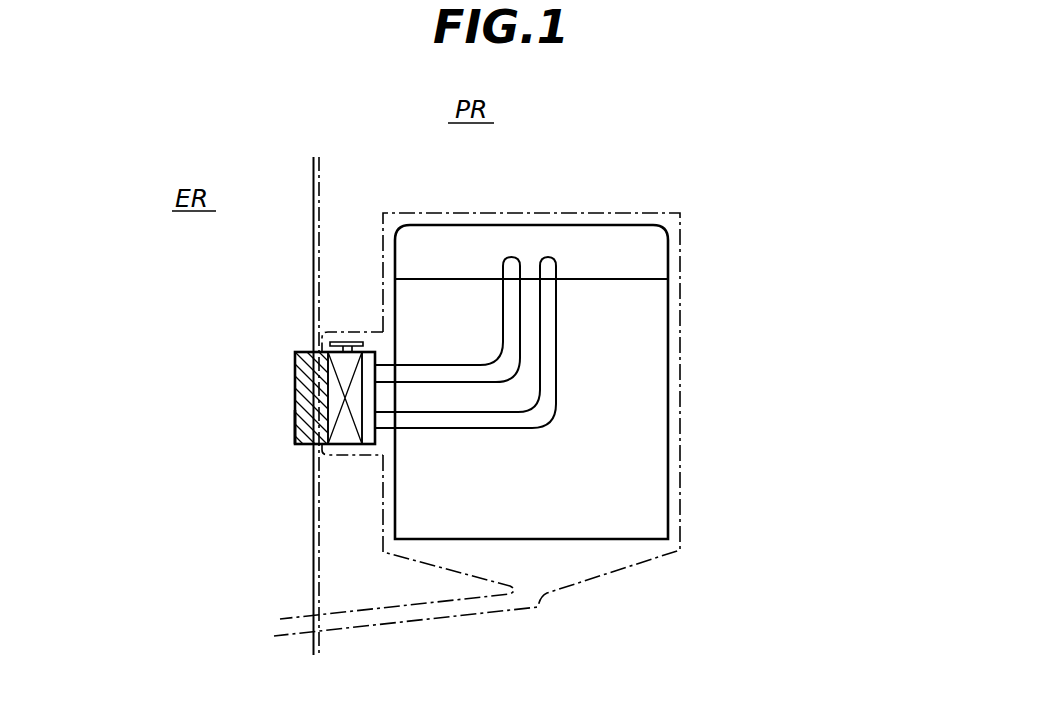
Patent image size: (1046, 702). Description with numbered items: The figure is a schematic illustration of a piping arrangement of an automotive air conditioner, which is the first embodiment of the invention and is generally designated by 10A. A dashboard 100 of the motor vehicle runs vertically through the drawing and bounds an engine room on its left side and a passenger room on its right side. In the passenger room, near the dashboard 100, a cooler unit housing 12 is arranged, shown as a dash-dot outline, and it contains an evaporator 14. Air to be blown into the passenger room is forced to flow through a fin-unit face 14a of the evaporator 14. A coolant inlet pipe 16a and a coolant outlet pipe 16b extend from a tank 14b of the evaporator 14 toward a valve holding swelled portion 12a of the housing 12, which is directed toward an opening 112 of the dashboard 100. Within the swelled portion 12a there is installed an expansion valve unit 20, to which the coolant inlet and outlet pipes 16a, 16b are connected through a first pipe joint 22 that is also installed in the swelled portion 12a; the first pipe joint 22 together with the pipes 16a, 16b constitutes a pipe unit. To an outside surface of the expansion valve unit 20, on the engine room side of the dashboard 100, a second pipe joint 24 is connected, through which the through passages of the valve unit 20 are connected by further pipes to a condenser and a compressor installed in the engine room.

The dashboard 100 is at (316, 196).
The cooler unit housing 12 is at (658, 213).
The valve holding swelled portion 12a is at (335, 330).
The evaporator 14 is at (668, 394).
The tank 14b is at (640, 258).
The fin-unit face 14a is at (628, 462).
The coolant inlet pipe 16a is at (556, 316).
The coolant outlet pipe 16b is at (503, 328).
The piping arrangement of automotive air conditioner 10A is at (283, 468).
The second pipe joint 24 is at (295, 359).
The opening 112 is at (295, 420).
The expansion valve unit 20 is at (347, 445).
The first pipe joint 22 is at (377, 441).